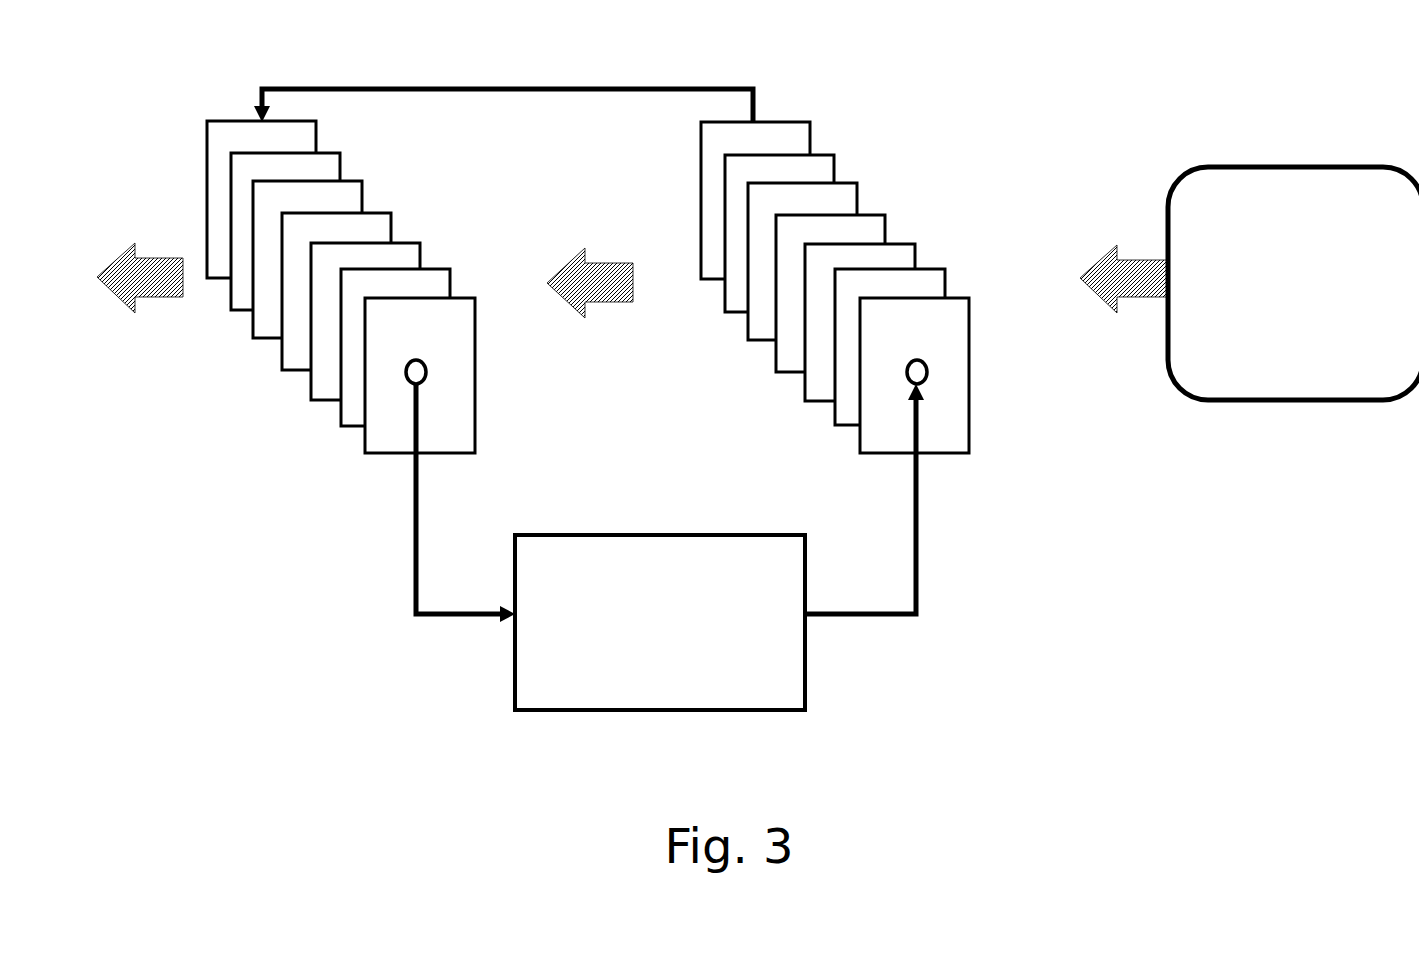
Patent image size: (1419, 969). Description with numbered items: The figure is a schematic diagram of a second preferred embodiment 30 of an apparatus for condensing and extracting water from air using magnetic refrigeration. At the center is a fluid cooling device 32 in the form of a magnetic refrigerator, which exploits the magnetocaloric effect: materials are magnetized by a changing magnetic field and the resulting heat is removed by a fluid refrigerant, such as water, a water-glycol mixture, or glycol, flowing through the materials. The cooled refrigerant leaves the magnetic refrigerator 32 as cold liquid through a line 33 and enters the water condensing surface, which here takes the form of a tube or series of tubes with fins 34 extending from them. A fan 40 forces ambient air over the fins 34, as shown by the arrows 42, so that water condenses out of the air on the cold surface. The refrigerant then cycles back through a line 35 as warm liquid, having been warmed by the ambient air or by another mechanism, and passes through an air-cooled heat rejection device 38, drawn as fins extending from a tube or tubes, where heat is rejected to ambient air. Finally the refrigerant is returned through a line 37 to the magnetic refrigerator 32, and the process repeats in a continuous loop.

The second preferred embodiment 30 is at (1056, 614).
The fluid cooling device 32 is at (787, 678).
The line 33 is at (918, 525).
The fins 34 is at (945, 420).
The line 35 is at (620, 88).
The line 37 is at (412, 530).
The air-cooled heat rejection device 38 is at (353, 403).
The fan 40 is at (1268, 368).
The arrows 42 is at (148, 268).